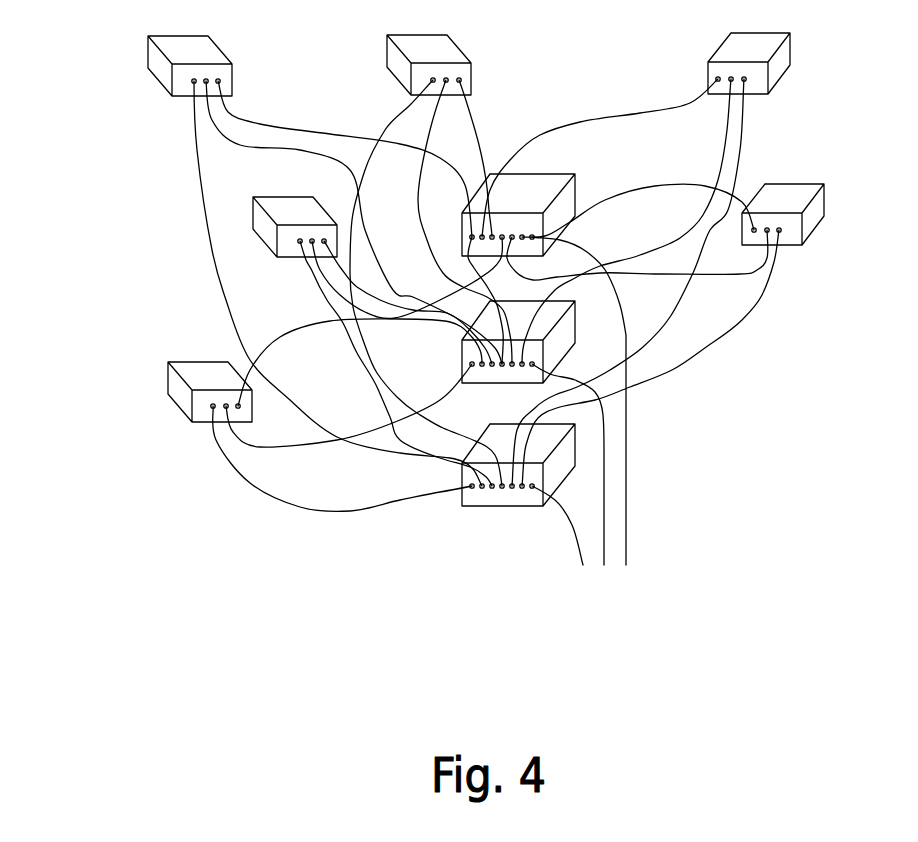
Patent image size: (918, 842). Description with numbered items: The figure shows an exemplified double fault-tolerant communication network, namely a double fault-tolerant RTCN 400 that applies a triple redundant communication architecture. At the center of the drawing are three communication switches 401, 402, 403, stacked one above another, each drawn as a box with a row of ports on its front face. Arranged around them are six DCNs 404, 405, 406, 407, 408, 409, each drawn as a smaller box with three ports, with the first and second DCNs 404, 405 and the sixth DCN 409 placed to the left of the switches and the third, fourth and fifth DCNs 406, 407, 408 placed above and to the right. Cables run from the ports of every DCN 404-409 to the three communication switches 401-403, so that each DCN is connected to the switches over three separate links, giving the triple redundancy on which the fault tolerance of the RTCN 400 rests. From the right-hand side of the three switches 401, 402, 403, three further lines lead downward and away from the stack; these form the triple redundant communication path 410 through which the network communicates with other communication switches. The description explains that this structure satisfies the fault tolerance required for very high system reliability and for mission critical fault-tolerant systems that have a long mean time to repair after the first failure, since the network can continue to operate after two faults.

The double fault-tolerant RTCN 400 is at (166, 257).
The communication switch 401 is at (534, 201).
The communication switch 402 is at (490, 342).
The communication switch 403 is at (518, 481).
The DCN 404 is at (210, 377).
The DCN 405 is at (190, 51).
The DCN 406 is at (429, 51).
The DCN 407 is at (749, 49).
The DCN 408 is at (783, 200).
The DCN 409 is at (295, 212).
The triple redundant communication path 410 is at (580, 421).